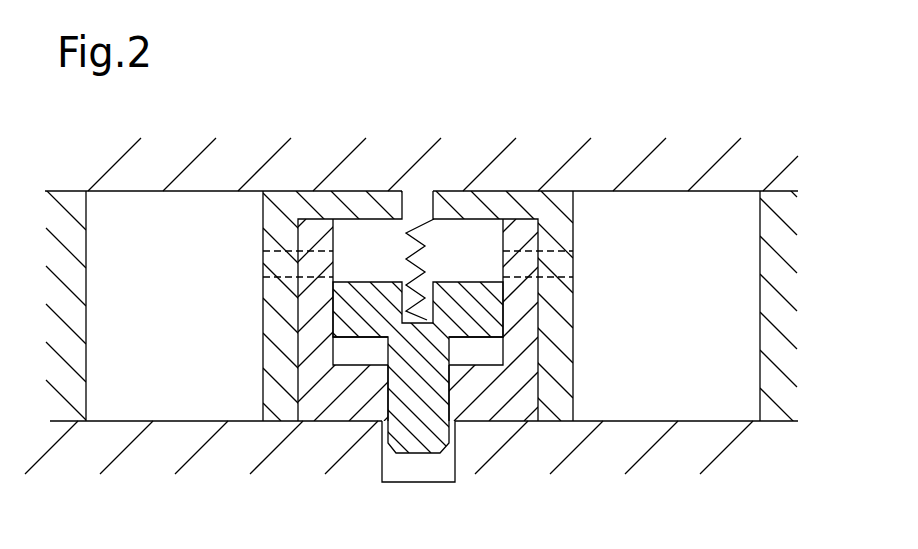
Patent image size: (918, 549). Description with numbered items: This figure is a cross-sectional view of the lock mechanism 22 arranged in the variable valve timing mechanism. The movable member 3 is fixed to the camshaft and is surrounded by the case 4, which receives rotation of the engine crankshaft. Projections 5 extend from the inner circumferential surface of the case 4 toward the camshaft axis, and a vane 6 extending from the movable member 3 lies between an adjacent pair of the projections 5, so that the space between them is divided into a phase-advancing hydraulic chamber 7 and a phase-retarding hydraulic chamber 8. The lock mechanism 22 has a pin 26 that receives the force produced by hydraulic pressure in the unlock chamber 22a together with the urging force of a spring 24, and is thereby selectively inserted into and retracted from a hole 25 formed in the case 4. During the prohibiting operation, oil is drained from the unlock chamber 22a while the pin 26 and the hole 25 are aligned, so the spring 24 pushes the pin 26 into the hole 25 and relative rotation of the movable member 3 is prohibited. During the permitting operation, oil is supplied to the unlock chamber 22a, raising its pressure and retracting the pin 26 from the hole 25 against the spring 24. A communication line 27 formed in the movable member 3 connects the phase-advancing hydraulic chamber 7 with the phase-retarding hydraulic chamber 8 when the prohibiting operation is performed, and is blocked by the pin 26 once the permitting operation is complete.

The movable member 3 is at (462, 306).
The case 4 is at (658, 433).
The projection 5 is at (86, 290).
The vane 6 is at (575, 330).
The phase-advancing hydraulic chamber 7 is at (147, 202).
The phase-retarding hydraulic chamber 8 is at (672, 177).
The lock mechanism 22 is at (422, 203).
The unlock chamber 22a is at (483, 355).
The spring 24 is at (450, 250).
The hole 25 is at (402, 482).
The pin 26 is at (380, 270).
The communication line 27 is at (275, 276).